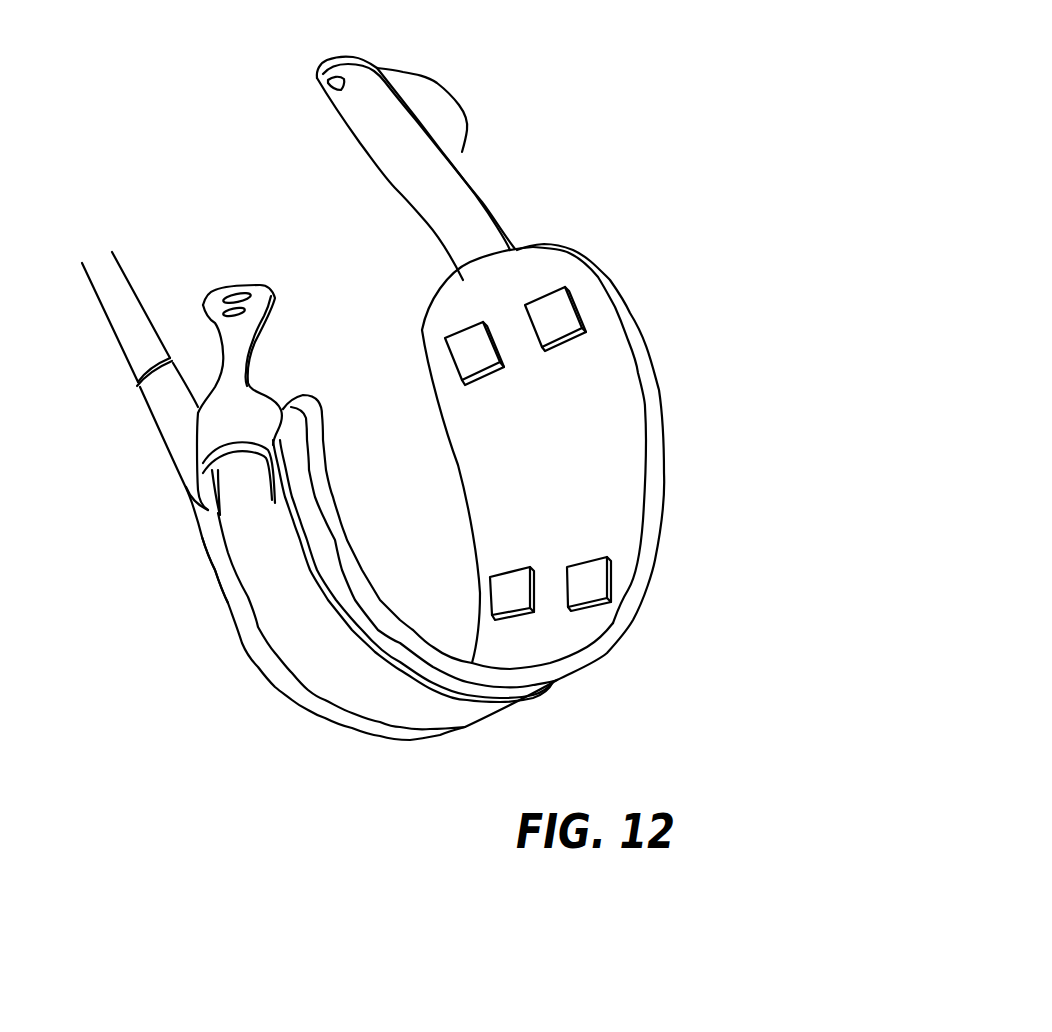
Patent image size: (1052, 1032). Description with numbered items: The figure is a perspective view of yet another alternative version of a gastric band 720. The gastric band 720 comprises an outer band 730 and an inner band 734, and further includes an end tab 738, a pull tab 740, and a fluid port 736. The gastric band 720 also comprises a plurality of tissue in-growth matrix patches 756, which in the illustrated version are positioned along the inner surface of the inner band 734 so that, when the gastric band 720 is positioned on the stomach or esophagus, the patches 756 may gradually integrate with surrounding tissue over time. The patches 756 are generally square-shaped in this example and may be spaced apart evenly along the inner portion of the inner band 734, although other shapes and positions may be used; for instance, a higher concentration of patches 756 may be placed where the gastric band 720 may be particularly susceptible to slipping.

The gastric band 720 is at (653, 208).
The outer band 730 is at (313, 647).
The inner band 734 is at (212, 558).
The fluid port 736 is at (155, 411).
The end tab 738 is at (221, 307).
The pull tab 740 is at (442, 100).
The tissue in-growth matrix patches 756 is at (472, 351).